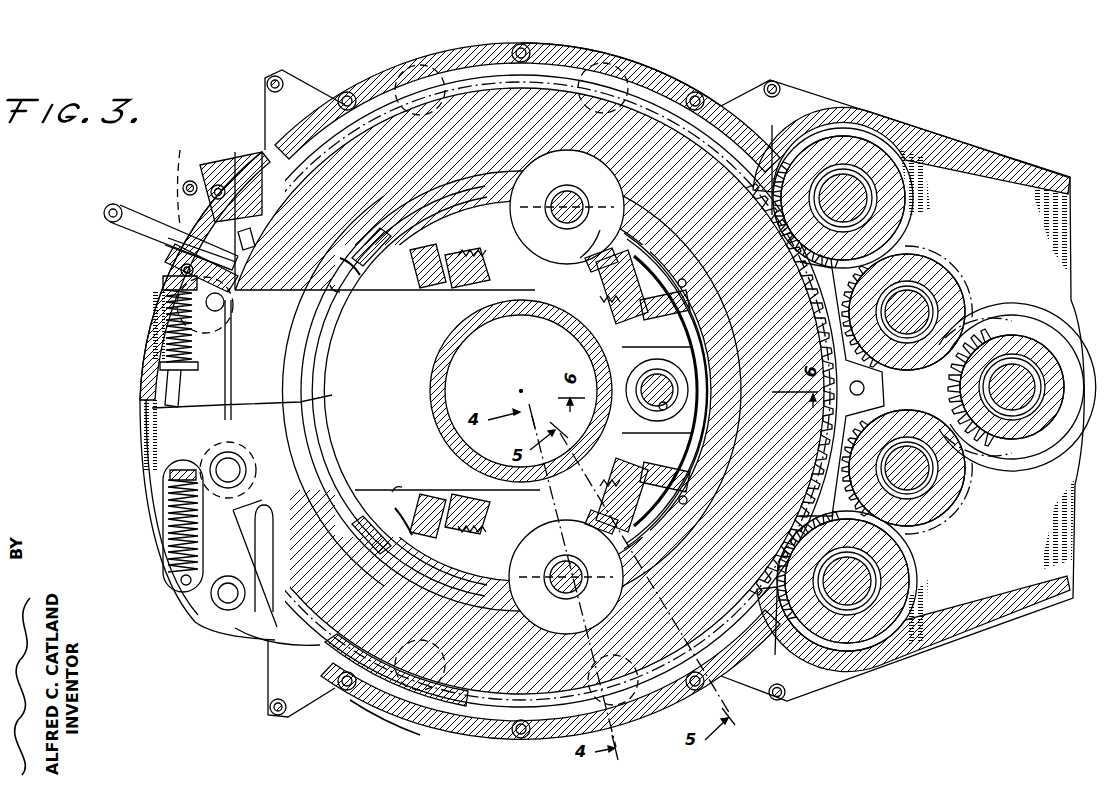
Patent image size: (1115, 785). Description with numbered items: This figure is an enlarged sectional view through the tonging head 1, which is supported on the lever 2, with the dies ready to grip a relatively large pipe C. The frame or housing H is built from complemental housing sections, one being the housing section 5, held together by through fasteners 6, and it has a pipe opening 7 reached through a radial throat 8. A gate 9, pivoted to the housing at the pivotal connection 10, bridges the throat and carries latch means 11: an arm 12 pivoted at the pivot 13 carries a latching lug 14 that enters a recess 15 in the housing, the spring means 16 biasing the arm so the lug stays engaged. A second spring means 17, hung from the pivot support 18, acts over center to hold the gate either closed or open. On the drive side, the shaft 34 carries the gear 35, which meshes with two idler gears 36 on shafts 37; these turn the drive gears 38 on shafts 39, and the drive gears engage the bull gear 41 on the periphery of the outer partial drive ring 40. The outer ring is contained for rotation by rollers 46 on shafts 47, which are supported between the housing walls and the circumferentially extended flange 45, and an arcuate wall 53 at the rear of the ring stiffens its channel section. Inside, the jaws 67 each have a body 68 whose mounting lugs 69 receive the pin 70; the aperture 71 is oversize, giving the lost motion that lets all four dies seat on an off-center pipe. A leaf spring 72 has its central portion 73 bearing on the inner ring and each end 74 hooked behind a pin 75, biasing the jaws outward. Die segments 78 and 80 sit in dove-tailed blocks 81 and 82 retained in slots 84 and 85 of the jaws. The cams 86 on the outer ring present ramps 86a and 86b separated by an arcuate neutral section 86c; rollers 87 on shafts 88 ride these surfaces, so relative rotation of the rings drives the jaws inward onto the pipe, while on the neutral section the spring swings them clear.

The tonging head 1 is at (358, 82).
The lever 2 is at (992, 152).
The housing section 5 is at (355, 700).
The through fasteners 6 is at (523, 52).
The pipe opening 7 is at (350, 351).
The radial throat 8 is at (257, 522).
The gate 9 is at (132, 418).
The pivotal connection 10 is at (220, 598).
The latch means 11 is at (168, 242).
The arm 12 is at (138, 210).
The pivot 13 is at (215, 280).
The latching lug 14 is at (246, 240).
The recess 15 is at (181, 177).
The spring means 16 is at (163, 331).
The spring means 17 is at (168, 547).
The pivot support 18 is at (175, 580).
The shaft 34 is at (1020, 390).
The gear 35 is at (1050, 368).
The idler gears 36 is at (955, 300).
The shafts 37 is at (913, 305).
The drive gears 38 is at (890, 200).
The shafts 39 is at (855, 200).
The outer partial drive ring 40 is at (640, 112).
The bull gear 41 is at (772, 130).
The circumferentially extended flange 45 is at (602, 66).
The rollers 46 is at (426, 80).
The shafts 47 is at (412, 718).
The arcuate wall 53 is at (662, 322).
The jaws 67 is at (405, 282).
The body 68 is at (578, 276).
The mounting lugs 69 is at (645, 378).
The pin 70 is at (655, 387).
The aperture 71 is at (663, 410).
The leaf spring 72 is at (678, 286).
The central portion 73 is at (660, 389).
The end 74 is at (666, 282).
The pin 75 is at (668, 245).
The die segment 78 is at (604, 305).
The die segment 80 is at (486, 391).
The block 81 is at (583, 337).
The block 82 is at (432, 282).
The slot 84 is at (600, 262).
The slot 85 is at (402, 262).
The cams 86 is at (343, 270).
The ramps 86a is at (582, 225).
The ramps 86b is at (335, 288).
The arcuate neutral section 86c is at (566, 392).
The rollers 87 is at (560, 245).
The shaft 88 is at (554, 210).
The pipe C is at (447, 386).
The frame or housing H is at (454, 44).